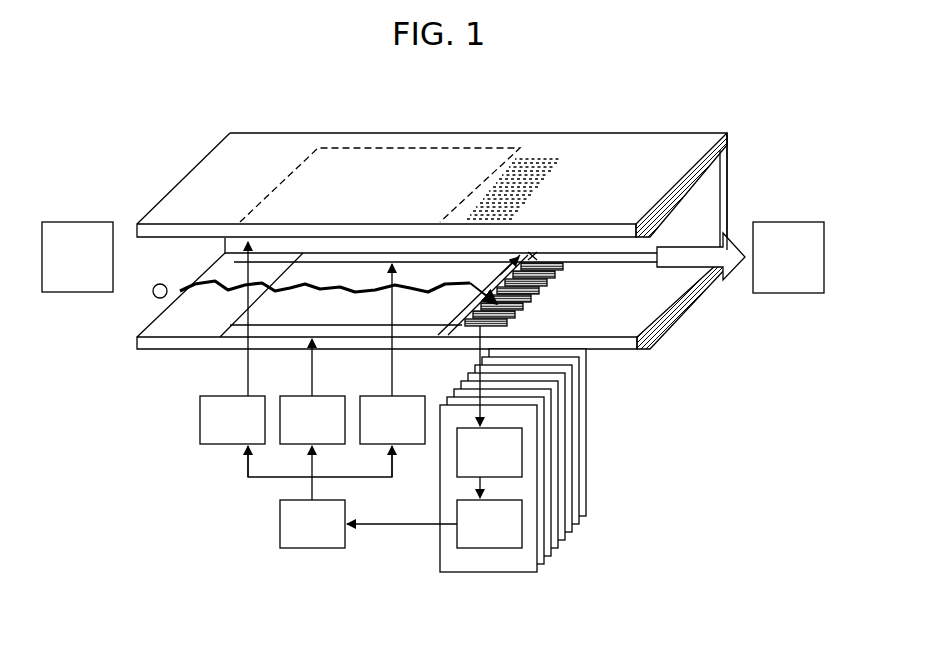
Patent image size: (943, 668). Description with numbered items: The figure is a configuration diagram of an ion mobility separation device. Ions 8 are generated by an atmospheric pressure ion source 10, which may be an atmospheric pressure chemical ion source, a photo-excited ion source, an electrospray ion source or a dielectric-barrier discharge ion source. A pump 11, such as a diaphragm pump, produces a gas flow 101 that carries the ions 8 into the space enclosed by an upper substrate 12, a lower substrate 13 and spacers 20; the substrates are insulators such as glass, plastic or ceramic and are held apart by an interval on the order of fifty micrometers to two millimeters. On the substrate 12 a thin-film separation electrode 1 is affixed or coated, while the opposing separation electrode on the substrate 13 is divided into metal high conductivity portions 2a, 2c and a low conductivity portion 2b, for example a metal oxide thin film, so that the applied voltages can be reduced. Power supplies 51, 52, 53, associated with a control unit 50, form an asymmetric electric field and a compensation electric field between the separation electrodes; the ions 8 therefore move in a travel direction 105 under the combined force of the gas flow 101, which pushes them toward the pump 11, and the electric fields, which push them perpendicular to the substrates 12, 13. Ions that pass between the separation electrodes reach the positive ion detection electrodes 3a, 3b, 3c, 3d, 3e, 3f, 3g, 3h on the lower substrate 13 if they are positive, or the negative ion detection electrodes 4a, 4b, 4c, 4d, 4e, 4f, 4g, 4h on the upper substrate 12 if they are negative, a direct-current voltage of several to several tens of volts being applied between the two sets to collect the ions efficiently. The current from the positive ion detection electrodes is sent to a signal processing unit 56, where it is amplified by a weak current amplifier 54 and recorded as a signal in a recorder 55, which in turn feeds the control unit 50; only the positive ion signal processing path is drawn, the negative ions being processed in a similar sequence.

The separation electrode 1 is at (380, 185).
The high conductivity portion 2a is at (246, 347).
The low conductivity portion 2b is at (312, 300).
The high conductivity portion 2c is at (350, 253).
The positive ion detection electrode 3a is at (507, 322).
The positive ion detection electrode 3b is at (515, 314).
The positive ion detection electrode 3c is at (523, 306).
The positive ion detection electrode 3d is at (531, 298).
The positive ion detection electrode 3e is at (539, 290).
The positive ion detection electrode 3f is at (547, 282).
The positive ion detection electrode 3g is at (555, 274).
The positive ion detection electrode 3h is at (563, 266).
The negative ion detection electrode 4a is at (512, 219).
The negative ion detection electrode 4b is at (520, 211).
The negative ion detection electrode 4c is at (527, 203).
The negative ion detection electrode 4d is at (534, 195).
The negative ion detection electrode 4e is at (540, 187).
The negative ion detection electrode 4f is at (547, 179).
The negative ion detection electrode 4g is at (553, 171).
The negative ion detection electrode 4h is at (560, 163).
The ions 8 is at (150, 297).
The atmospheric pressure ion source 10 is at (77, 257).
The pump 11 is at (788, 257).
The substrate 12 is at (247, 152).
The substrate 13 is at (627, 349).
The spacer 20 is at (730, 170).
The gas flow 101 is at (705, 247).
The ion travel direction 105 is at (420, 268).
The control unit 50 is at (312, 524).
The power supply 51 is at (232, 420).
The power supply 52 is at (312, 420).
The power supply 53 is at (392, 420).
The weak current amplifier 54 is at (489, 452).
The recorder 55 is at (489, 524).
The signal processing unit 56 is at (540, 537).